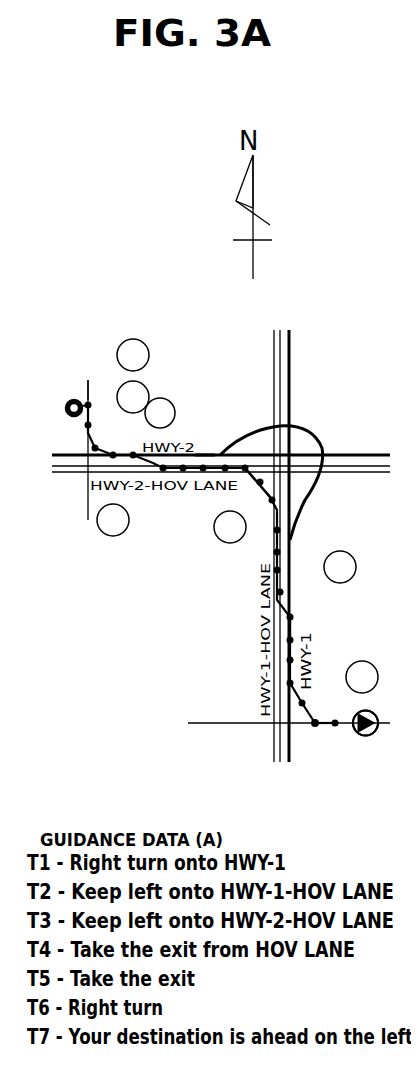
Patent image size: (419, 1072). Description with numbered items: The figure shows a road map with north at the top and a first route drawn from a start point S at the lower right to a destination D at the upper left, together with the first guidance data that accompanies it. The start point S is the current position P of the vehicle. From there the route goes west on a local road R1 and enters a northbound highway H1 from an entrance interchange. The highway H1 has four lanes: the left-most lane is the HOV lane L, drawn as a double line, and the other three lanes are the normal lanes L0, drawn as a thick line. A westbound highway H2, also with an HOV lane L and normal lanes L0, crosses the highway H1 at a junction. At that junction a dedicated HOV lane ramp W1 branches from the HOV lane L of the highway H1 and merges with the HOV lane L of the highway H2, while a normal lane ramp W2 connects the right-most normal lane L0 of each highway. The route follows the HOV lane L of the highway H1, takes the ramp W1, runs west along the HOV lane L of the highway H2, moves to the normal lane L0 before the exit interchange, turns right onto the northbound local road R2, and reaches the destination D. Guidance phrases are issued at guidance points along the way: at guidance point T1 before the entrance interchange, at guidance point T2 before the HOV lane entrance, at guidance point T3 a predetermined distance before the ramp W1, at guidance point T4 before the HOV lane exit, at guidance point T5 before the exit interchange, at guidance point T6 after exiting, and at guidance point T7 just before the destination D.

The highway H1 is at (292, 380).
The highway H2 is at (353, 480).
The HOV lane L is at (68, 477).
The normal lanes L0 is at (205, 452).
The local road R1 is at (325, 727).
The local road R2 is at (87, 387).
The HOV lane ramp W1 is at (253, 478).
The normal lane ramp W2 is at (313, 427).
The destination D is at (65, 405).
The position of the vehicle P is at (372, 710).
The start point S is at (370, 737).
The guidance point T1 is at (353, 691).
The guidance point T2 is at (331, 581).
The guidance point T3 is at (246, 525).
The guidance point T4 is at (126, 510).
The guidance point T5 is at (152, 425).
The guidance point T6 is at (124, 410).
The guidance point T7 is at (124, 368).